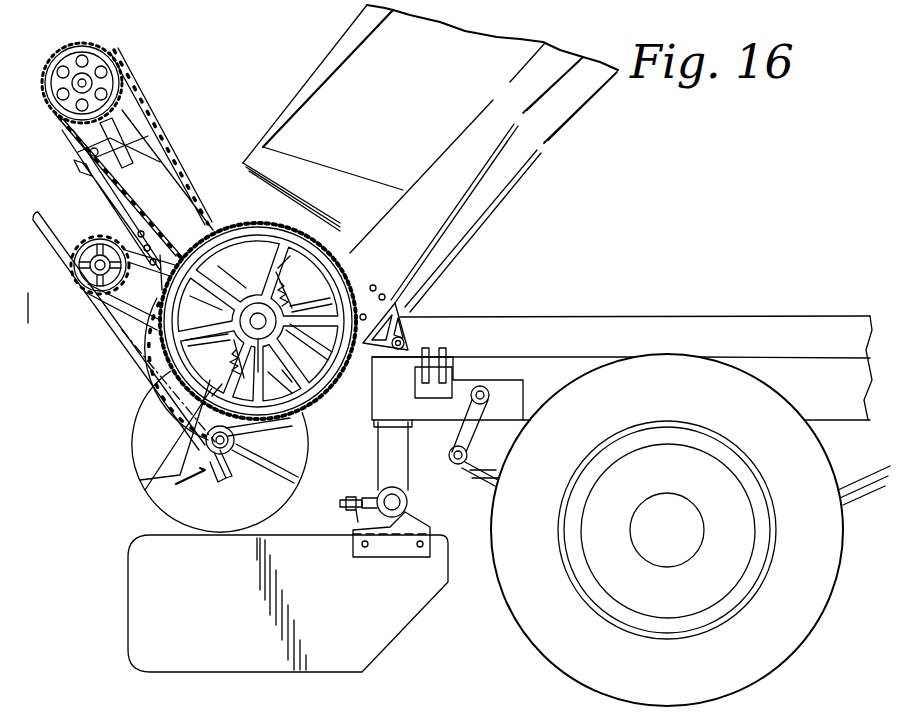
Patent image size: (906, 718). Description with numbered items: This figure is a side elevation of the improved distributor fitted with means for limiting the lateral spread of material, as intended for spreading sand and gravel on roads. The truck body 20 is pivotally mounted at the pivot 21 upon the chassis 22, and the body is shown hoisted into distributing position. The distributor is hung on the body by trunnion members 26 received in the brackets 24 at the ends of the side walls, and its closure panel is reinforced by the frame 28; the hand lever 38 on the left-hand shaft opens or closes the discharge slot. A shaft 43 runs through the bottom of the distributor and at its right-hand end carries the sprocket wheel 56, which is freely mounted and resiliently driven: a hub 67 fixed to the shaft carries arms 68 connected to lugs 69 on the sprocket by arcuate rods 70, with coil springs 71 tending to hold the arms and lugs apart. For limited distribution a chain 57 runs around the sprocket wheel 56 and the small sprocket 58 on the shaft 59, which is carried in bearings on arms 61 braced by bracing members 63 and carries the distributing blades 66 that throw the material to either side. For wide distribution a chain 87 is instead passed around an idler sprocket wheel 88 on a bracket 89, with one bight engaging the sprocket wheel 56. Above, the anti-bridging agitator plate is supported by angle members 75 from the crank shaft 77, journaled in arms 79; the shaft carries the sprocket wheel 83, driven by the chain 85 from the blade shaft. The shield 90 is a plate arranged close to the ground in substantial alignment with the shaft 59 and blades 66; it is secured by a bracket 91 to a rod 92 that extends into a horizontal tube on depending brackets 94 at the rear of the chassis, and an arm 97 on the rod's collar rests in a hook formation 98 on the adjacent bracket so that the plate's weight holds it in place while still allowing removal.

The truck body 20 is at (318, 62).
The pivot 21 is at (405, 342).
The chassis 22 is at (580, 332).
The bracket 24 is at (80, 158).
The trunnion member 26 is at (99, 153).
The frame 28 is at (112, 206).
The hand lever 38 is at (47, 253).
The shaft 43 is at (258, 321).
The sprocket wheel 56 is at (325, 273).
The chain 57 is at (268, 437).
The small sprocket 58 is at (205, 440).
The shaft 59 is at (232, 456).
The arm 61 is at (222, 488).
The bracing member 63 is at (283, 388).
The distributing blade 66 is at (294, 486).
The hub 67 is at (268, 355).
The arm 68 is at (254, 319).
The lug 69 is at (260, 318).
The arcuate rod 70 is at (258, 327).
The coil spring 71 is at (256, 323).
The angle member 75 is at (135, 110).
The shaft 77 is at (92, 84).
The arm 79 is at (100, 126).
The sprocket wheel 83 is at (100, 49).
The chain 85 is at (195, 190).
The chain 87 is at (128, 352).
The idler sprocket wheel 88 is at (88, 290).
The bracket 89 is at (130, 317).
The shield 90 is at (130, 574).
The bracket 91 is at (412, 530).
The rod 92 is at (410, 500).
The depending bracket 94 is at (400, 447).
The arm 97 is at (340, 503).
The hook formation 98 is at (356, 514).